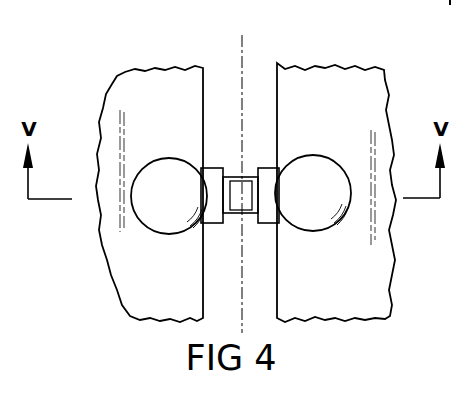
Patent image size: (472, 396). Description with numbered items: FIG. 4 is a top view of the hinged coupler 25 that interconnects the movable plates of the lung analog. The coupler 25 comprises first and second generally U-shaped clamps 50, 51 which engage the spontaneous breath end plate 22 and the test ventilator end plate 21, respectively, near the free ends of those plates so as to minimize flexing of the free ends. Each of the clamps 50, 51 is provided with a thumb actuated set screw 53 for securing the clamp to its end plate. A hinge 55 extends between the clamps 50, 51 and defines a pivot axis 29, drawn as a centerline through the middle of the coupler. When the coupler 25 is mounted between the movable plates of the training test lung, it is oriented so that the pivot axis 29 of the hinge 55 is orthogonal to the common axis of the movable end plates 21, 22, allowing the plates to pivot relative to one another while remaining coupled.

The test ventilator end plate 21 is at (128, 286).
The spontaneous breath end plate 22 is at (320, 285).
The hinged coupler 25 is at (339, 138).
The pivot axis 29 is at (243, 37).
The first U-shaped clamp 50 is at (270, 183).
The second U-shaped clamp 51 is at (216, 178).
The thumb actuated set screw 53 is at (156, 204).
The hinge 55 is at (239, 216).